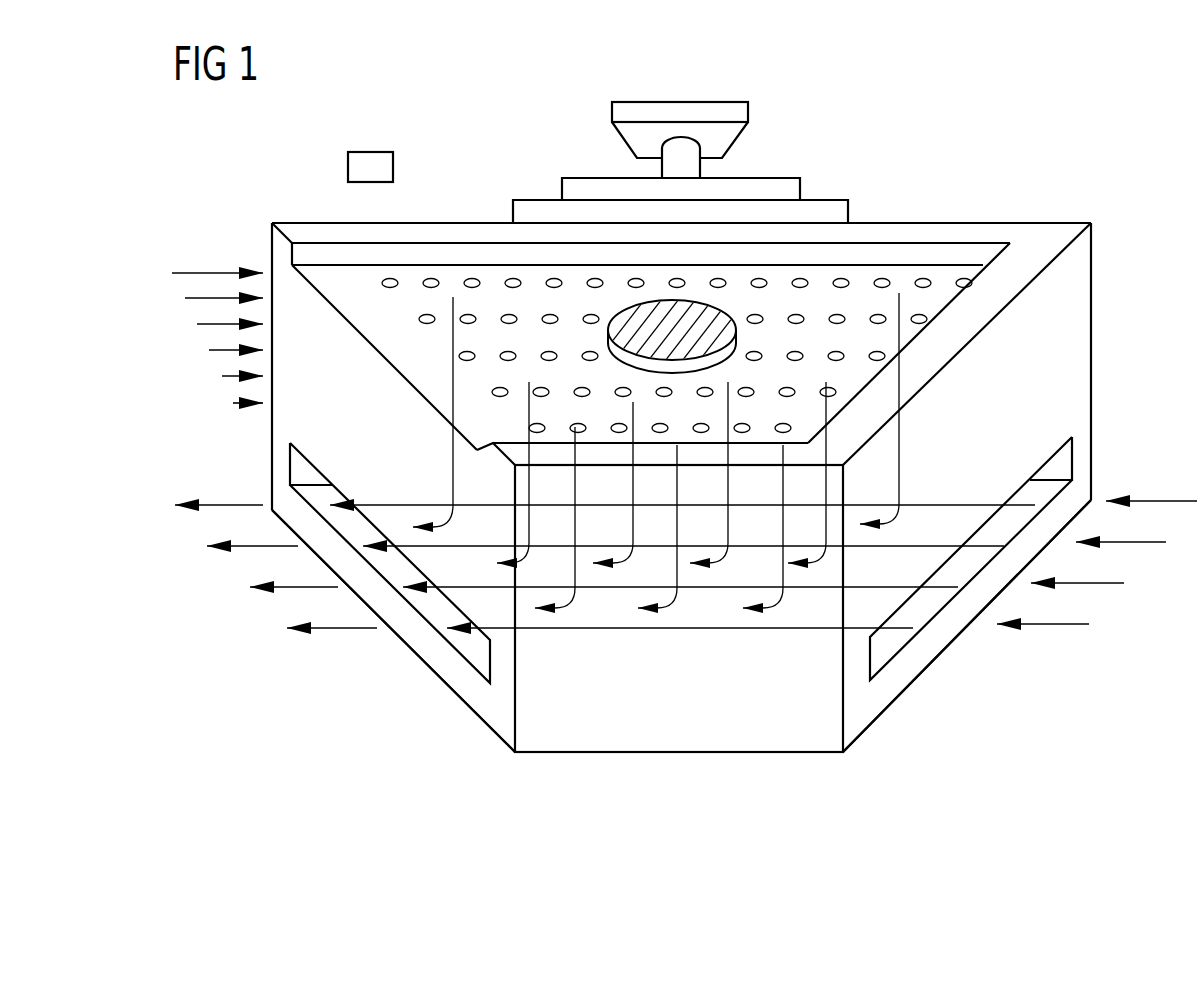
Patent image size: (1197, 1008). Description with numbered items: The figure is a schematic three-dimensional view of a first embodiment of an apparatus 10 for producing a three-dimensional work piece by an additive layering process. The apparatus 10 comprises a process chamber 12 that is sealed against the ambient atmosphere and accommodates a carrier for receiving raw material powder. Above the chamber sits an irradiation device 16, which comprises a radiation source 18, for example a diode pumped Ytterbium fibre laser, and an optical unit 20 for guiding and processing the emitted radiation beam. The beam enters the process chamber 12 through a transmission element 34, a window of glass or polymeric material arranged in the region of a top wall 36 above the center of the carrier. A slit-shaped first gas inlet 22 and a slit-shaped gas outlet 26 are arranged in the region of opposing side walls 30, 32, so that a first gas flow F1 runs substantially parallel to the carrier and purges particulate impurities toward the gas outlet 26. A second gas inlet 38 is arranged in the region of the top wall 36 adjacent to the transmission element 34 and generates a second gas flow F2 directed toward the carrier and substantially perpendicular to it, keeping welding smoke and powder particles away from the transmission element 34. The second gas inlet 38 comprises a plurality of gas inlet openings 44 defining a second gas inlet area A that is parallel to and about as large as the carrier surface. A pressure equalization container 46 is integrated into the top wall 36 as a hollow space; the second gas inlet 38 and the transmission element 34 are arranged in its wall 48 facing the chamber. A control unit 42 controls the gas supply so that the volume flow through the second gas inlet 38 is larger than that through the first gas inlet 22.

The apparatus 10 is at (728, 409).
The process chamber 12 is at (1100, 396).
The irradiation device 16 is at (674, 130).
The radiation source 18 is at (728, 112).
The optical unit 20 is at (723, 130).
The first gas inlet 22 is at (1060, 462).
The gas outlet 26 is at (300, 470).
The side wall 30 is at (864, 712).
The side wall 32 is at (495, 714).
The transmission element 34 is at (718, 327).
The top wall 36 is at (1040, 230).
The second gas inlet 38 is at (400, 350).
The control unit 42 is at (350, 167).
The gas inlet openings 44 is at (924, 317).
The pressure equalization container 46 is at (731, 340).
The wall of the pressure equalization container 48 is at (851, 380).
The second gas inlet area A is at (667, 432).
The first gas flow F1 is at (693, 630).
The second gas flow F2 is at (900, 457).